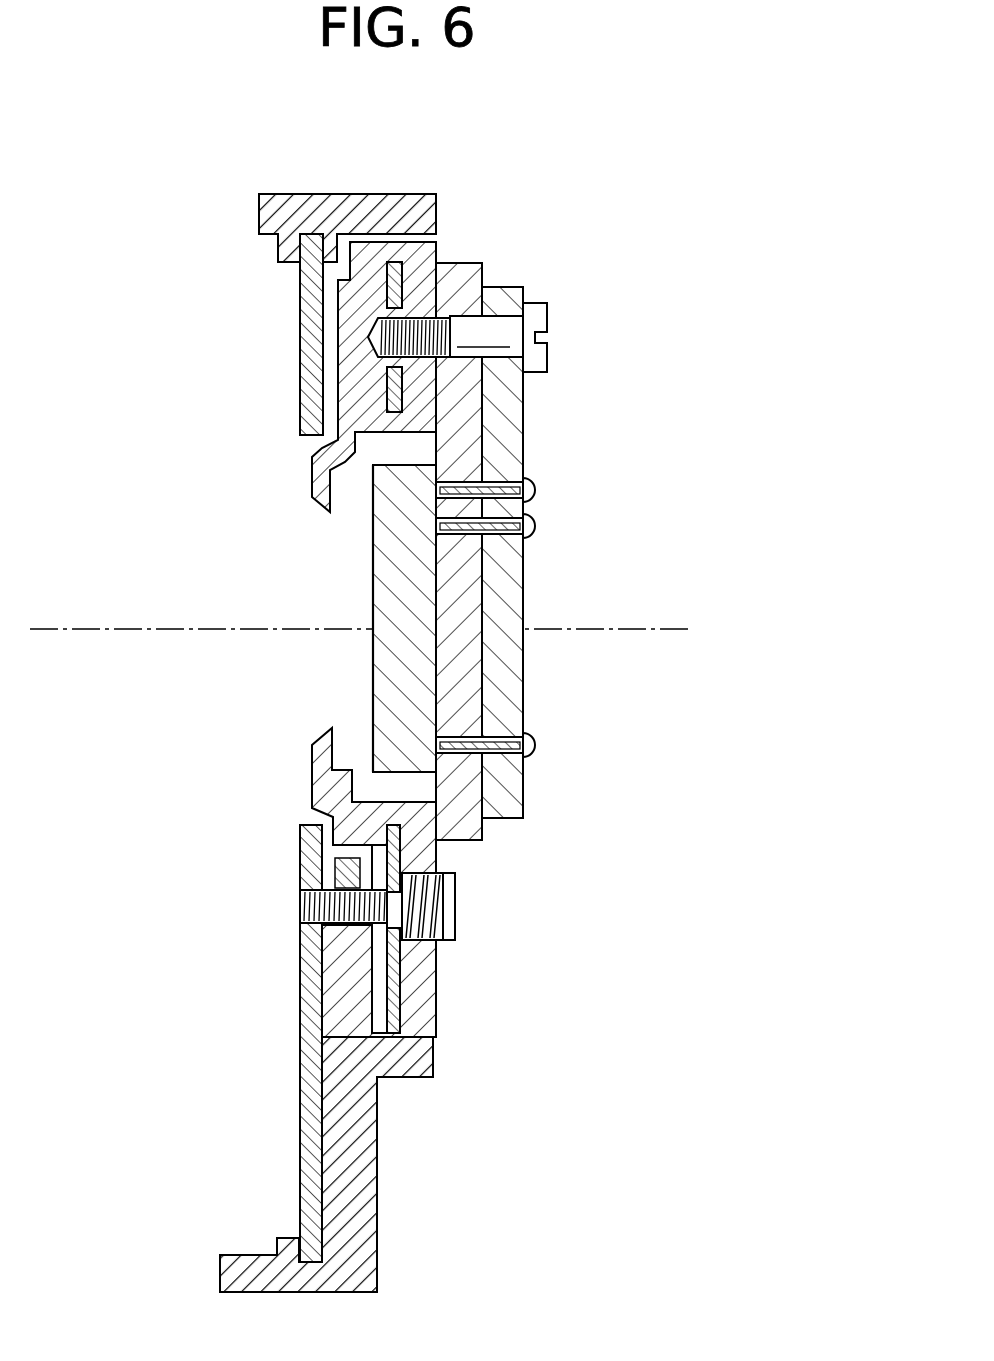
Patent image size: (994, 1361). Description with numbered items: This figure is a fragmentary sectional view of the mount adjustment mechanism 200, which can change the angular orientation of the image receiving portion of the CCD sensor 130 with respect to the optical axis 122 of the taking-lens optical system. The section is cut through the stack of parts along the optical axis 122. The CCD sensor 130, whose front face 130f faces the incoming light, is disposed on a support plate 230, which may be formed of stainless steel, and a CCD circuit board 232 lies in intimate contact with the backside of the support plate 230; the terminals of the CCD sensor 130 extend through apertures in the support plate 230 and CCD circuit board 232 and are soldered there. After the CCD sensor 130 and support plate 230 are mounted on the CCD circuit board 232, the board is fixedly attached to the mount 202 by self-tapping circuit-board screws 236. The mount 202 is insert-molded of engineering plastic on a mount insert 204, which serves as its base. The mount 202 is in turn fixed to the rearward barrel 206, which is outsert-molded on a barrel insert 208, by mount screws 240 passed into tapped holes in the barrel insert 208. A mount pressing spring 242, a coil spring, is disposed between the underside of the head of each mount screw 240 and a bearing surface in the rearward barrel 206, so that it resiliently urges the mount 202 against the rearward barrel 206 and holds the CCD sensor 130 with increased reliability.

The optical axis 122 is at (103, 627).
The CCD sensor 130 is at (400, 570).
The reflecting surface of mirror 130f is at (370, 683).
The mount adjustment mechanism 200 is at (465, 172).
The mount 202 is at (365, 295).
The mount insert 204 is at (392, 393).
The rearward barrel 206 is at (262, 216).
The barrel insert 208 is at (313, 355).
The support plate 230 is at (470, 585).
The CCD circuit board 232 is at (500, 694).
The circuit-board screw 236 is at (540, 318).
The mount screw 240 is at (450, 898).
The mount pressing spring 242 is at (422, 920).